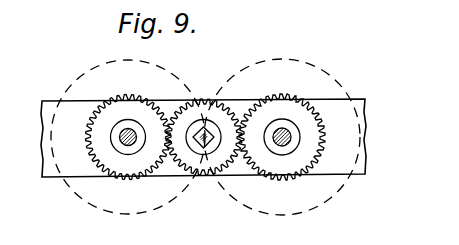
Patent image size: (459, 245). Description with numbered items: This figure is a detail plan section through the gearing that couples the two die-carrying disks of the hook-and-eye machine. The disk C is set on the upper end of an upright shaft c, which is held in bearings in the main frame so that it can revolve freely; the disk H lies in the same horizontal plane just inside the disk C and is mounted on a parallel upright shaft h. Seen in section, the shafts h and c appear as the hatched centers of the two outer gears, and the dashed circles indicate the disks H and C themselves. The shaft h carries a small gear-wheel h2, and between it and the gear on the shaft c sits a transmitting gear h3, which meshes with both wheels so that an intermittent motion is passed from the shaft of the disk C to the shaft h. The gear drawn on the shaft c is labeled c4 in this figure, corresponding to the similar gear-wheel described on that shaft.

The disk H is at (80, 88).
The disk C is at (316, 81).
The small gear-wheel h2 is at (97, 130).
The upright shaft h is at (125, 148).
The transmitting gear h3 is at (204, 136).
The right gear wheel c4 is at (302, 147).
The upright shaft c is at (280, 147).